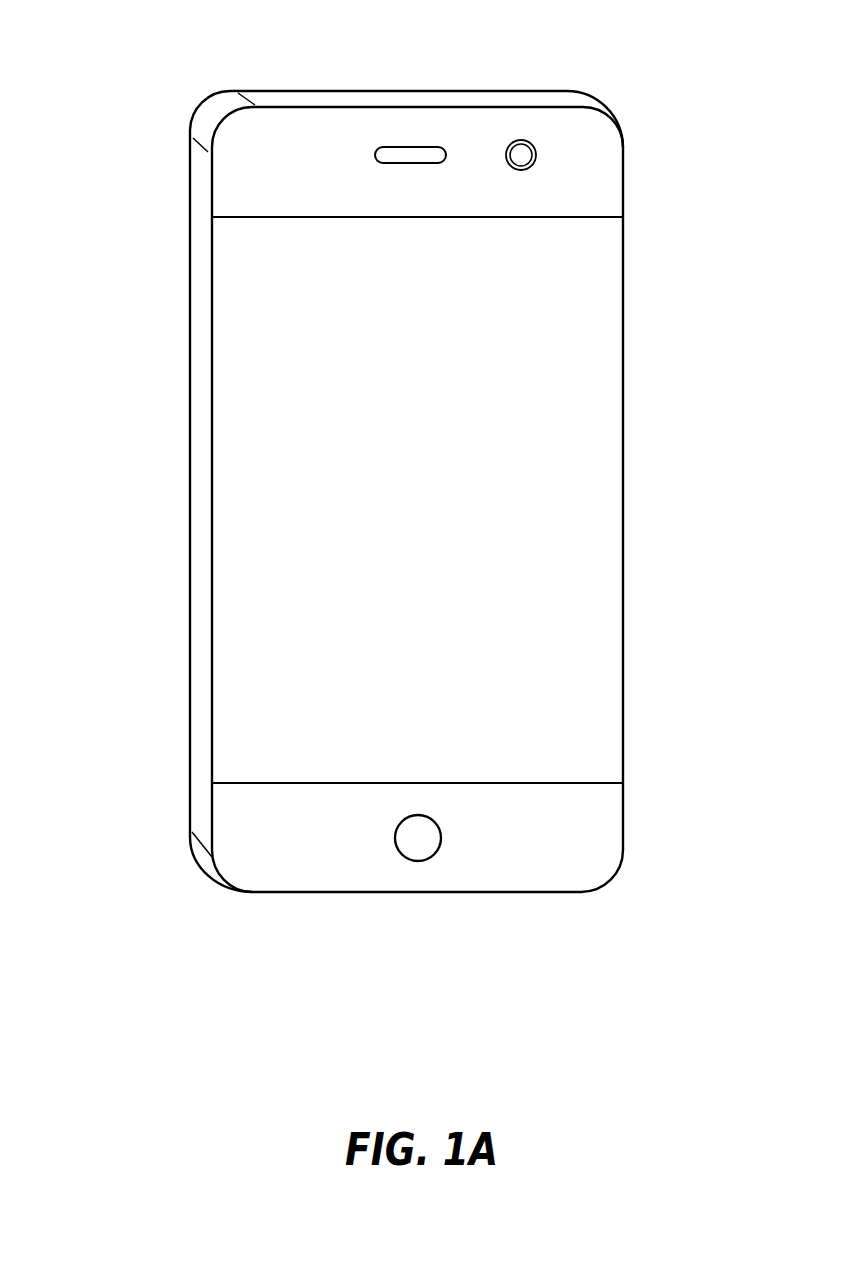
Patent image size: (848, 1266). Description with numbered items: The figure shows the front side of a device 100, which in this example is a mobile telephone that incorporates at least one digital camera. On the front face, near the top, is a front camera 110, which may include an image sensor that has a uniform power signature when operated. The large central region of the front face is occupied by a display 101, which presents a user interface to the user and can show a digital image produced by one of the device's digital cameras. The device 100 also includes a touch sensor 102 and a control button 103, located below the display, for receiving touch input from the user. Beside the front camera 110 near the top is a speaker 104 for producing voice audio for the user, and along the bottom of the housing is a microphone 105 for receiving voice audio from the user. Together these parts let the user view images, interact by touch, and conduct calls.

The device 100 is at (87, 44).
The display 101 is at (223, 452).
The touch sensor 102 is at (293, 362).
The control button 103 is at (438, 855).
The speaker 104 is at (437, 141).
The microphone 105 is at (327, 893).
The front camera 110 is at (543, 156).